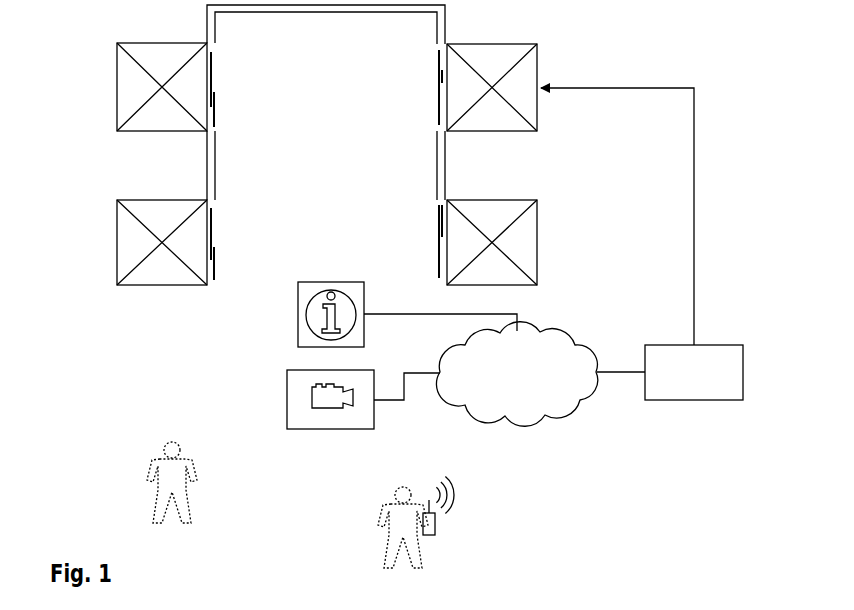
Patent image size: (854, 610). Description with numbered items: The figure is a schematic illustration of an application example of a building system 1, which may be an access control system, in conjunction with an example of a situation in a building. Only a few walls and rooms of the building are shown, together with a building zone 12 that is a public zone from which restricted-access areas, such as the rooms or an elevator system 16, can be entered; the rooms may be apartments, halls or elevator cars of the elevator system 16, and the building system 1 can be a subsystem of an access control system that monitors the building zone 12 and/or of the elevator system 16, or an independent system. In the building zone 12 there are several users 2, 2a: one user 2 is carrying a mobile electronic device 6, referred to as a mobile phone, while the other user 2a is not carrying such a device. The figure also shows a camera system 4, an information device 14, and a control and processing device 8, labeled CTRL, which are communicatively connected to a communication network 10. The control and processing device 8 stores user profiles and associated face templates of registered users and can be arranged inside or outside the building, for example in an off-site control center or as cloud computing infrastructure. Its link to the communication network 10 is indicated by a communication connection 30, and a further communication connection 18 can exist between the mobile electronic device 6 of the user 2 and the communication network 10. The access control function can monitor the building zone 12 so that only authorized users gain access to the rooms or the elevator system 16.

The building system 1 is at (593, 316).
The user 2 is at (413, 502).
The user 2a is at (180, 452).
The camera system 4 is at (287, 388).
The mobile electronic device 6 is at (436, 524).
The control and processing device 8 is at (694, 400).
The communication network 10 is at (563, 405).
The building zone 12 is at (320, 220).
The information device 14 is at (296, 317).
The elevator system 16 is at (541, 66).
The communication connection 18 is at (458, 474).
The communication connection 30 is at (612, 372).